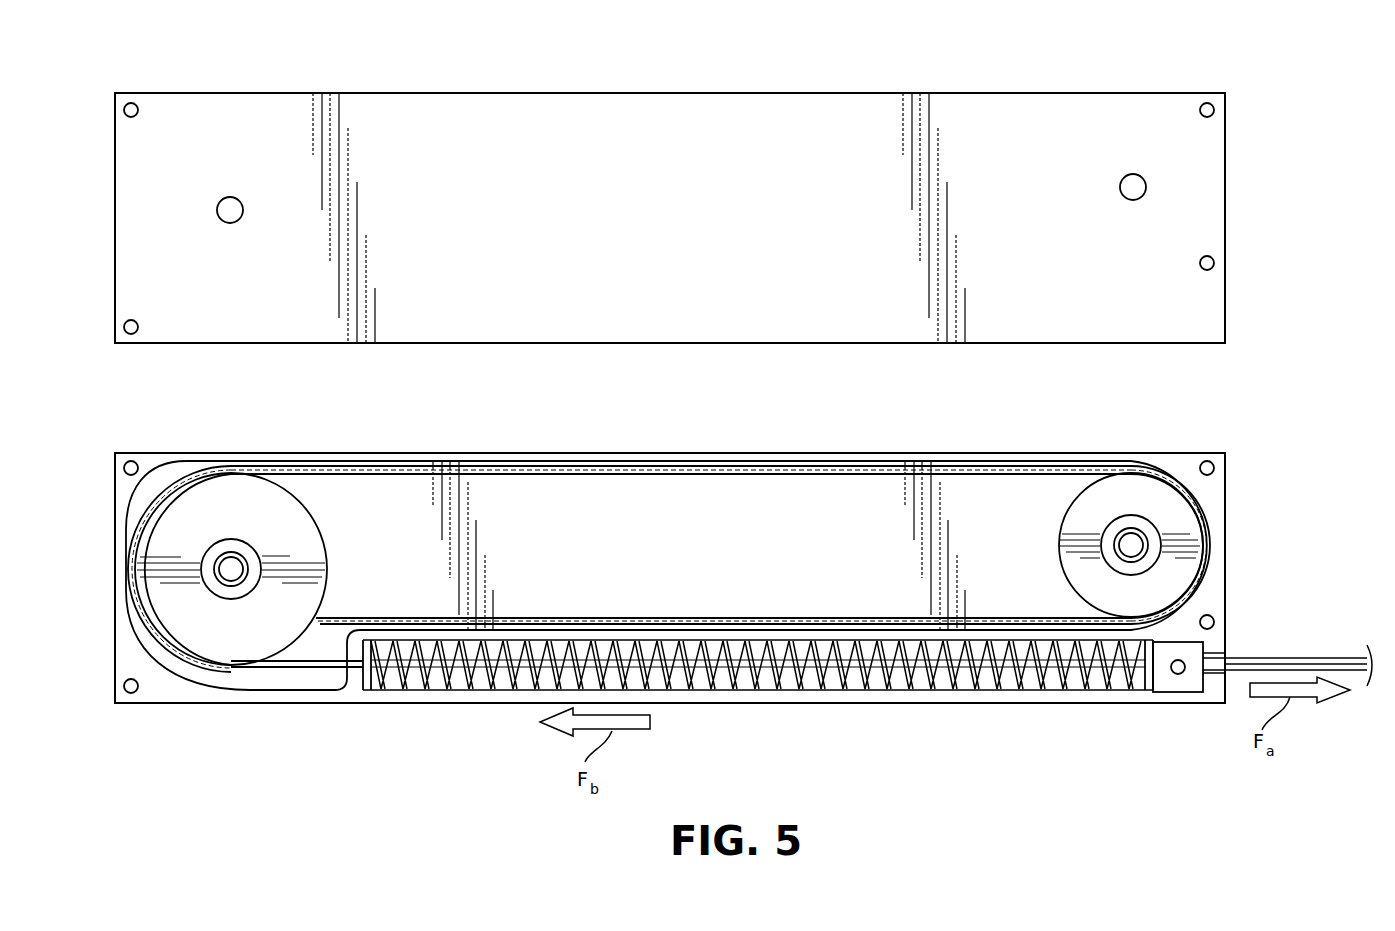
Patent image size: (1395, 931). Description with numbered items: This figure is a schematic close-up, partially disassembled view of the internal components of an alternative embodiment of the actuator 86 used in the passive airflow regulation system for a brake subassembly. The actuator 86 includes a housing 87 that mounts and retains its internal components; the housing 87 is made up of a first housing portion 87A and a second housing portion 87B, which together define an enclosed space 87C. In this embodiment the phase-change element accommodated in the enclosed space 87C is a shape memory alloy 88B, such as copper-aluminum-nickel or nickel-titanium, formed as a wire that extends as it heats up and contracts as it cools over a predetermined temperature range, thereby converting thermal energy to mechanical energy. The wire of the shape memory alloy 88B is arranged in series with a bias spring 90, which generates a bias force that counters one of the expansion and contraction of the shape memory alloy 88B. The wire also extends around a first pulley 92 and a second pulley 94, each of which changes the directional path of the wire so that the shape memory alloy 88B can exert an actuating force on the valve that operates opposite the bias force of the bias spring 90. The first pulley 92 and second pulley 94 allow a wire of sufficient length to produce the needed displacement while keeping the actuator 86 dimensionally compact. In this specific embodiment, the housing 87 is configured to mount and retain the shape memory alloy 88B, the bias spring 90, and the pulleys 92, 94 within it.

The actuator 86 is at (1258, 220).
The housing 87 is at (121, 393).
The first housing portion 87A is at (1034, 458).
The second housing portion 87B is at (613, 145).
The enclosed space 87C is at (717, 512).
The shape memory alloy 88B is at (322, 664).
The bias spring 90 is at (843, 690).
The first pulley 92 is at (228, 497).
The second pulley 94 is at (1143, 497).